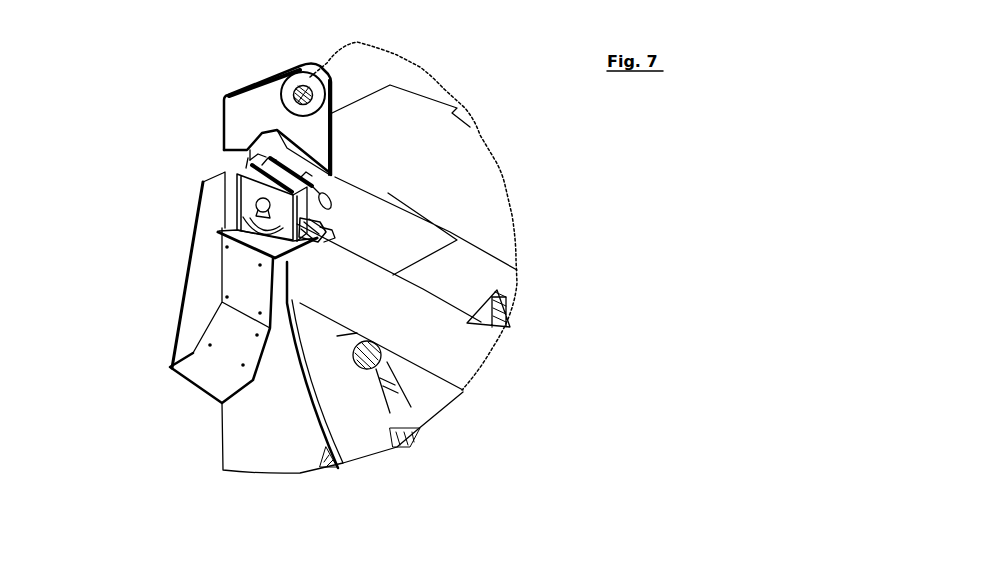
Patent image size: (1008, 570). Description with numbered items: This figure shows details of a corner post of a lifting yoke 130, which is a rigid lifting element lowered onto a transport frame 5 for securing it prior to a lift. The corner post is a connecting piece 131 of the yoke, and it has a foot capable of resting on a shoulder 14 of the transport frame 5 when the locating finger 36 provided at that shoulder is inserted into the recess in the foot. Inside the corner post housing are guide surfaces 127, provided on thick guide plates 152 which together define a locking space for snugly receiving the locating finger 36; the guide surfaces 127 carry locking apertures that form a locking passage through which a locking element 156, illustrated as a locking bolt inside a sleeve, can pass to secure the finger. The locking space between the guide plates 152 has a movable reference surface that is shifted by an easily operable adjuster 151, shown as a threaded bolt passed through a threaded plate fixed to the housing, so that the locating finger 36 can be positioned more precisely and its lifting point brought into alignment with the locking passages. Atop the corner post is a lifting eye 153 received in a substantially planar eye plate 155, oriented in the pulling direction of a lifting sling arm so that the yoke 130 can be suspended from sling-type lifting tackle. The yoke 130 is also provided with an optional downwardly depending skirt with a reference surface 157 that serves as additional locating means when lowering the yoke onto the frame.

The transport frame 5 is at (380, 338).
The shoulder 14 is at (308, 253).
The locating finger 36 is at (247, 167).
The guide surfaces 127 is at (338, 183).
The lifting yoke 130 is at (463, 188).
The connecting piece 131 is at (135, 173).
The adjuster 151 is at (308, 245).
The guide plates 152 is at (243, 193).
The lifting eye 153 is at (306, 92).
The eye plate 155 is at (230, 97).
The locking element 156 is at (216, 214).
The reference surface 157 is at (233, 285).